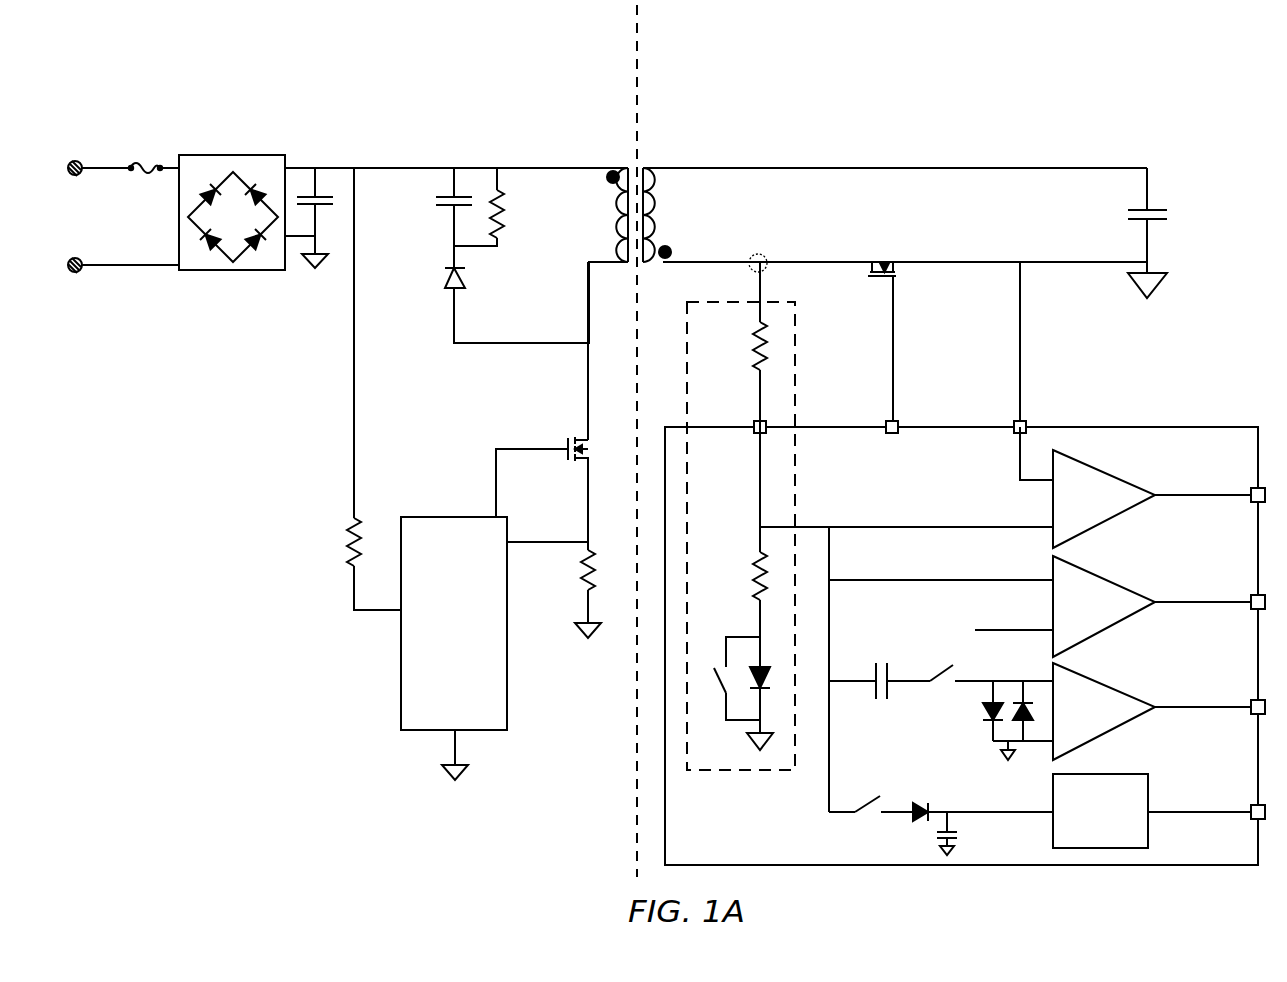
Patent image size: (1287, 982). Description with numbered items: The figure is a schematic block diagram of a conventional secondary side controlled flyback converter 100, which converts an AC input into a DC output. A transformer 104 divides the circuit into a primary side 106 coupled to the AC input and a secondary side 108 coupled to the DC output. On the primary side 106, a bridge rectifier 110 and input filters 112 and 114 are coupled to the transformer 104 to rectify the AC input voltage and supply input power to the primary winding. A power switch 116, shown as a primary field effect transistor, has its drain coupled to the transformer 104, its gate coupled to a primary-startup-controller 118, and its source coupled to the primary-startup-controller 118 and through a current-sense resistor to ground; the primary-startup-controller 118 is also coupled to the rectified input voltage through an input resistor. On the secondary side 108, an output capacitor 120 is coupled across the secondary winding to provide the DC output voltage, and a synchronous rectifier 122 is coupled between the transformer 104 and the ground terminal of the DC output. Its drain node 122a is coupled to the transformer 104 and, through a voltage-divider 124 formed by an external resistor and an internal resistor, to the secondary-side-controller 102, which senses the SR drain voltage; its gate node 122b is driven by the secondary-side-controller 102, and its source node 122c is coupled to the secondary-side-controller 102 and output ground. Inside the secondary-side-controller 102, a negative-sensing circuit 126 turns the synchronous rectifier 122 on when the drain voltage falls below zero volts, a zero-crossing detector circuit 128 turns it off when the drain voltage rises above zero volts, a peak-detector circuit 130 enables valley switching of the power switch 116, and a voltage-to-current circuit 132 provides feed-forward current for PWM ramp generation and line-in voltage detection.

The secondary side controlled flyback converter 100 is at (203, 583).
The secondary-side-controller 102 is at (748, 857).
The transformer 104 is at (629, 155).
The primary side 106 is at (581, 56).
The secondary side 108 is at (723, 56).
The bridge rectifier 110 is at (228, 275).
The input filter 112 is at (315, 148).
The input filter 114 is at (478, 146).
The power switch 116 is at (554, 434).
The primary-startup-controller 118 is at (440, 673).
The output capacitor 120 is at (1163, 210).
The synchronous rectifier 122 is at (885, 242).
The drain node 122a is at (767, 265).
The gate node 122b is at (881, 278).
The source node 122c is at (918, 263).
The voltage-divider 124 is at (685, 378).
The negative-sensing circuit 126 is at (1119, 585).
The zero-crossing detector circuit 128 is at (1116, 473).
The peak-detector circuit 130 is at (1131, 691).
The voltage-to-current circuit 132 is at (1127, 773).